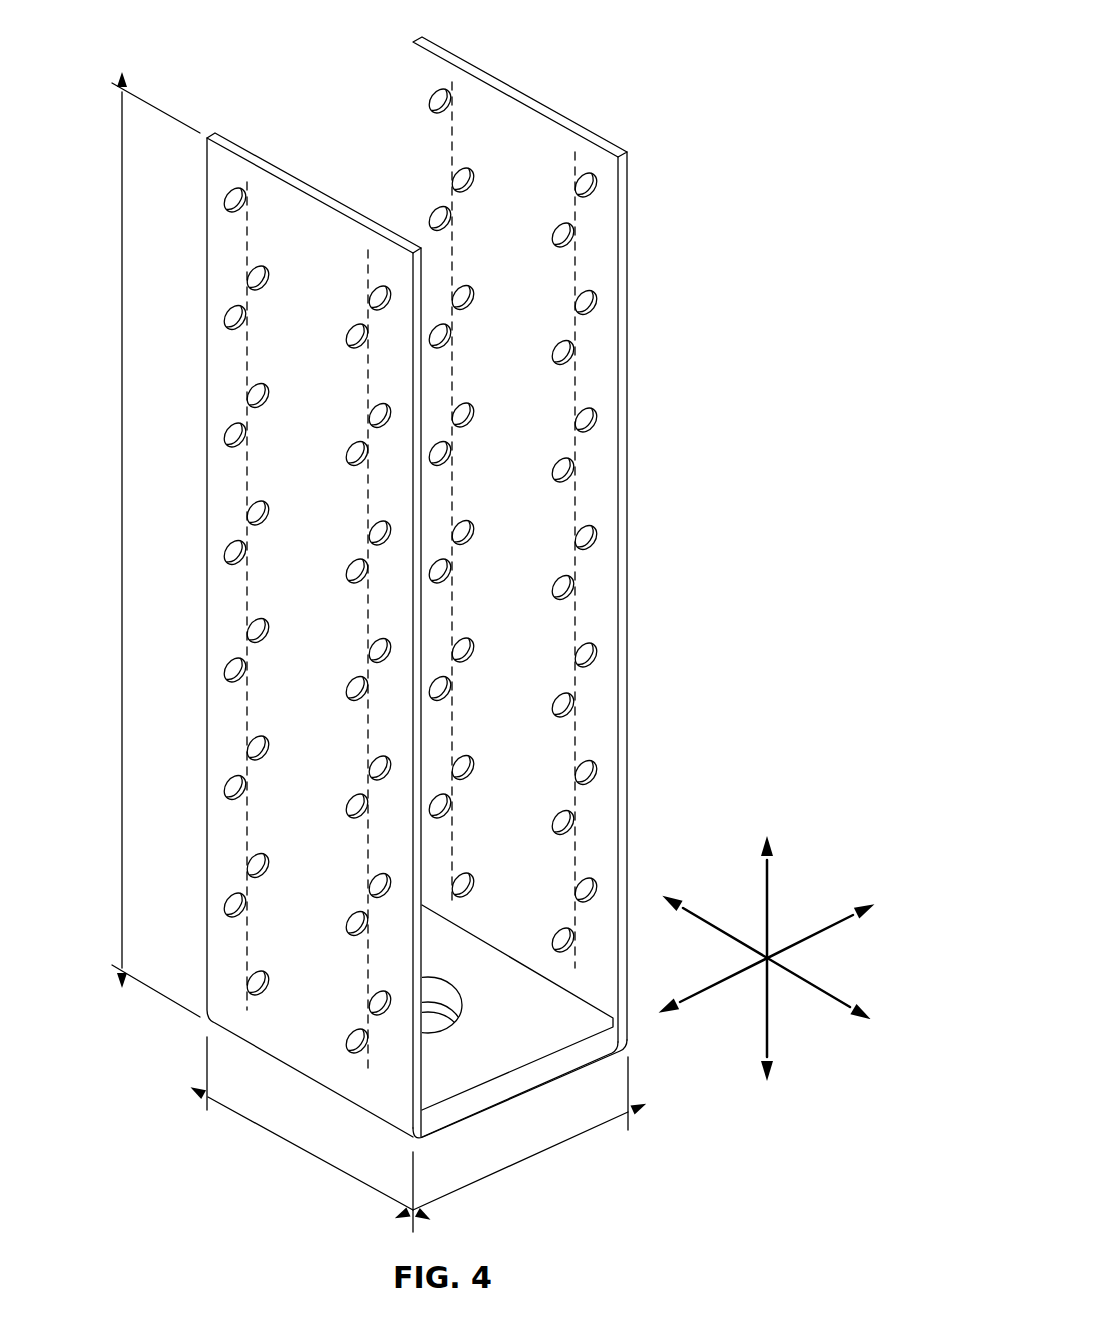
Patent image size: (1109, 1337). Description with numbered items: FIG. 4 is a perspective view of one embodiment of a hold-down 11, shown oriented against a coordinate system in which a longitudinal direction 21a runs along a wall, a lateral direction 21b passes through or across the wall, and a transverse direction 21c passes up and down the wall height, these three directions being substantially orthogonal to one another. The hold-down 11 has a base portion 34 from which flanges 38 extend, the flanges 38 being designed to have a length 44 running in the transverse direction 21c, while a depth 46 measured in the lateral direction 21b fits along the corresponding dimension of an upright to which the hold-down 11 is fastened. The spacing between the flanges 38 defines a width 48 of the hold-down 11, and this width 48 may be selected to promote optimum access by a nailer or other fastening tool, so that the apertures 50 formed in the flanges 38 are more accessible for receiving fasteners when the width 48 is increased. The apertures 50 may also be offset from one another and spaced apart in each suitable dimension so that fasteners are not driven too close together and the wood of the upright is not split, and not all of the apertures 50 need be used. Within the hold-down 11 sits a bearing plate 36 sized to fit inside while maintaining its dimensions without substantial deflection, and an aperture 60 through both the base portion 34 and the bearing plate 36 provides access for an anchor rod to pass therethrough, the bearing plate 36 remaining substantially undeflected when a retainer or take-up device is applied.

The hold-down 11 is at (740, 58).
The flanges 38 is at (295, 168).
The base portion 34 is at (482, 1117).
The bearing plate 36 is at (547, 1070).
The length 44 is at (122, 540).
The depth 46 is at (292, 1143).
The width 48 is at (527, 1158).
The apertures 50 is at (250, 857).
The aperture 60 is at (467, 1006).
The longitudinal direction 21a is at (828, 928).
The lateral direction 21b is at (815, 992).
The transverse direction 21c is at (768, 907).